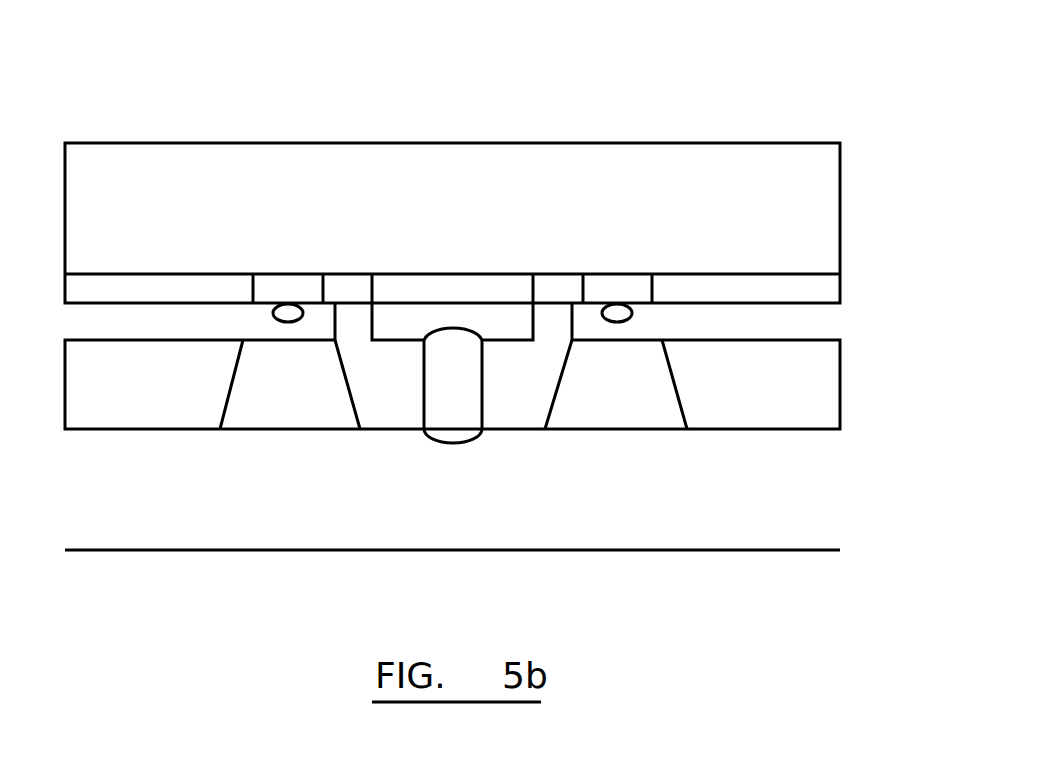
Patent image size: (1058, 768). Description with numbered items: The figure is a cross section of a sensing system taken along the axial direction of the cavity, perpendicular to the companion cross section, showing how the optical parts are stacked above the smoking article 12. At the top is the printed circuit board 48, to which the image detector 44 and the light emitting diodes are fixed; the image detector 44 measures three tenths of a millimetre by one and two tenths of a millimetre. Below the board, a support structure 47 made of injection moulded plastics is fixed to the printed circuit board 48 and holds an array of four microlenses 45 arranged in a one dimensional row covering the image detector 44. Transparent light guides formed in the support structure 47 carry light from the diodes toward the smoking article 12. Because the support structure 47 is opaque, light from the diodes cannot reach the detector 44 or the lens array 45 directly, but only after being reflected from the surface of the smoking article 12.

The smoking article 12 is at (748, 580).
The image detector 44 is at (453, 290).
The microlenses 45 is at (453, 403).
The support structure 47 is at (522, 403).
The printed circuit board (PCB) 48 is at (717, 192).